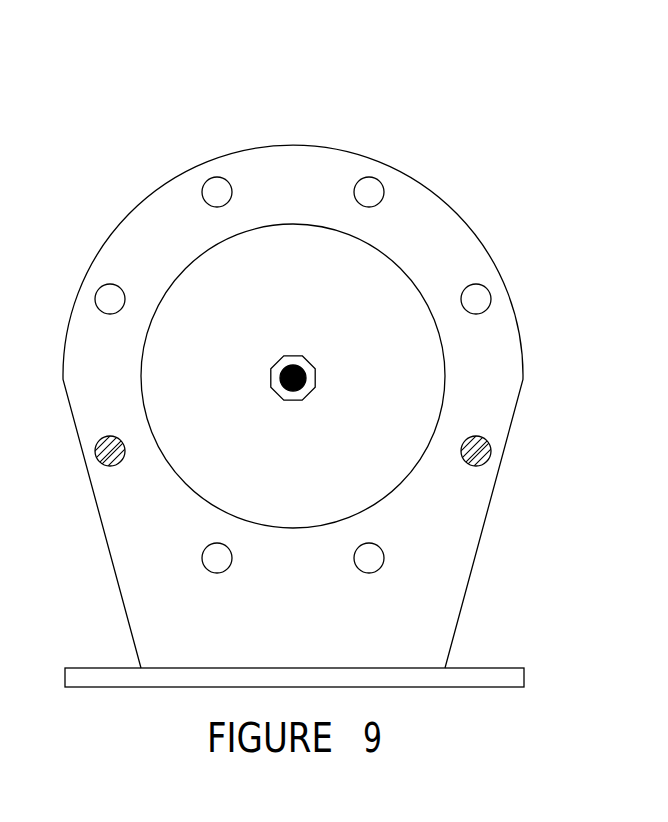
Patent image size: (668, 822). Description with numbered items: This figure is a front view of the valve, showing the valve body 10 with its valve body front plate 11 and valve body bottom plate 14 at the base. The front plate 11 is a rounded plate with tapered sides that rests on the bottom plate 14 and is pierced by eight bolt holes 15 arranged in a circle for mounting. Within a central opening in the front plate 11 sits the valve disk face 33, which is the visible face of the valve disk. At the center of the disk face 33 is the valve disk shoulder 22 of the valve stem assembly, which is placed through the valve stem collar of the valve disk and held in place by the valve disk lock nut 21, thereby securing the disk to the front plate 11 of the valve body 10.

The valve body 10 is at (452, 158).
The valve body front plate 11 is at (348, 157).
The valve disk face 33 is at (197, 275).
The bolt holes 15 is at (478, 302).
The valve disk lock nut 21 is at (270, 392).
The valve disk shoulder 22 is at (307, 370).
The valve body bottom plate 14 is at (505, 667).